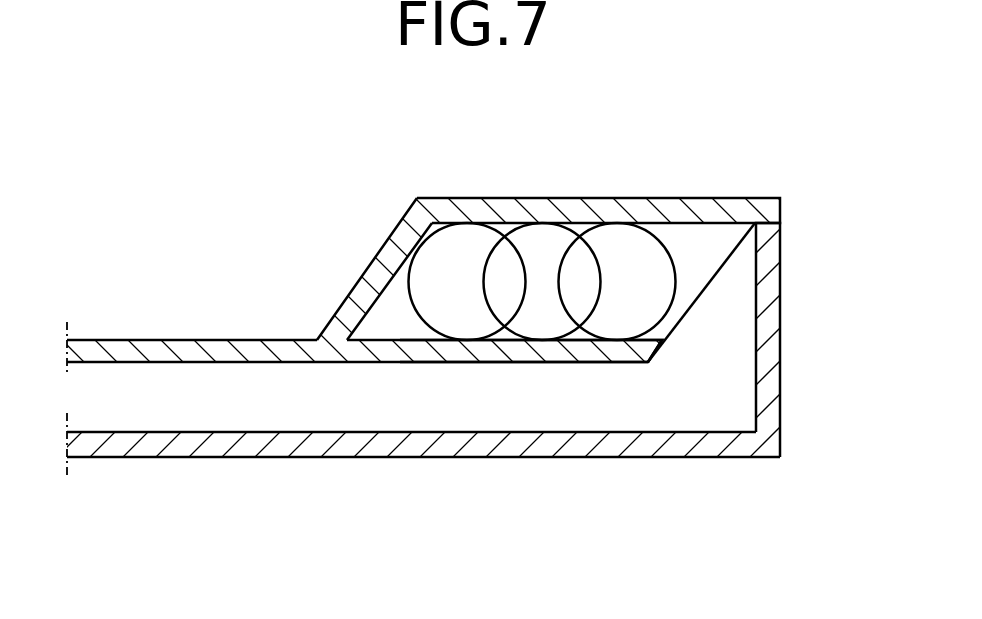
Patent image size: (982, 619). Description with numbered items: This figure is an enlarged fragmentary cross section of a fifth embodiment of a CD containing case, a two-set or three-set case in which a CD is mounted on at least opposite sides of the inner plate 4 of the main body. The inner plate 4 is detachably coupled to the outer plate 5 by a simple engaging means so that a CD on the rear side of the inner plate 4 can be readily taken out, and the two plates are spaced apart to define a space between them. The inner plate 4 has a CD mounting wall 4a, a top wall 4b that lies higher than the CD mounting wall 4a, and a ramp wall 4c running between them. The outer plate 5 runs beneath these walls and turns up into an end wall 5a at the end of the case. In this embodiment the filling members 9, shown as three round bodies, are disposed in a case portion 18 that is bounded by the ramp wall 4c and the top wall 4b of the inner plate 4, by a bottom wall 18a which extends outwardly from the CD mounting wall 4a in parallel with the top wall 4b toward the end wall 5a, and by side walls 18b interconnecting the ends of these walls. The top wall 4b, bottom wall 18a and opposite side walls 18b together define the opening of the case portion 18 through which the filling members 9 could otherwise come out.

The inner plate 4 is at (491, 292).
The CD mounting wall 4a is at (237, 350).
The top wall 4b is at (615, 213).
The ramp wall 4c is at (362, 282).
The outer plate 5 is at (491, 384).
The end wall 5a is at (767, 350).
The filling members 9 is at (466, 240).
The case portion 18 is at (629, 372).
The bottom wall 18a is at (533, 353).
The side walls 18b is at (705, 252).